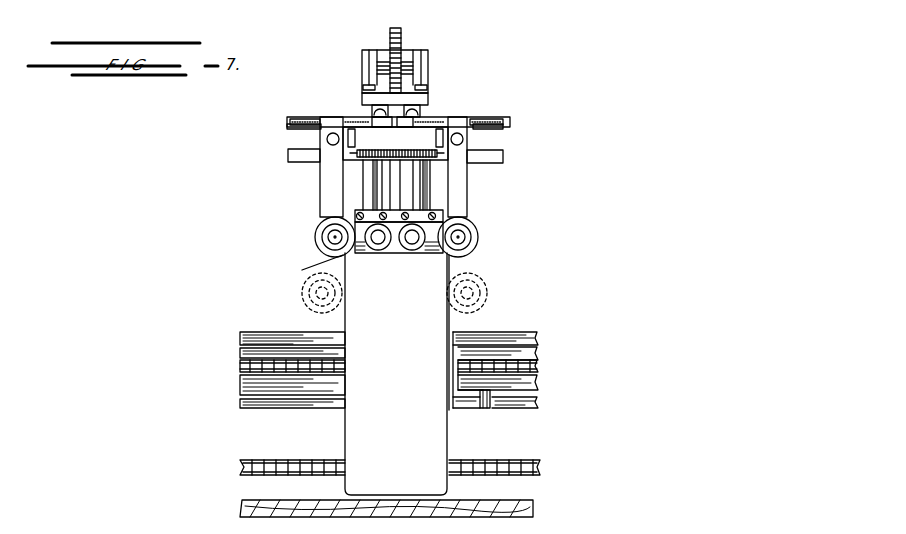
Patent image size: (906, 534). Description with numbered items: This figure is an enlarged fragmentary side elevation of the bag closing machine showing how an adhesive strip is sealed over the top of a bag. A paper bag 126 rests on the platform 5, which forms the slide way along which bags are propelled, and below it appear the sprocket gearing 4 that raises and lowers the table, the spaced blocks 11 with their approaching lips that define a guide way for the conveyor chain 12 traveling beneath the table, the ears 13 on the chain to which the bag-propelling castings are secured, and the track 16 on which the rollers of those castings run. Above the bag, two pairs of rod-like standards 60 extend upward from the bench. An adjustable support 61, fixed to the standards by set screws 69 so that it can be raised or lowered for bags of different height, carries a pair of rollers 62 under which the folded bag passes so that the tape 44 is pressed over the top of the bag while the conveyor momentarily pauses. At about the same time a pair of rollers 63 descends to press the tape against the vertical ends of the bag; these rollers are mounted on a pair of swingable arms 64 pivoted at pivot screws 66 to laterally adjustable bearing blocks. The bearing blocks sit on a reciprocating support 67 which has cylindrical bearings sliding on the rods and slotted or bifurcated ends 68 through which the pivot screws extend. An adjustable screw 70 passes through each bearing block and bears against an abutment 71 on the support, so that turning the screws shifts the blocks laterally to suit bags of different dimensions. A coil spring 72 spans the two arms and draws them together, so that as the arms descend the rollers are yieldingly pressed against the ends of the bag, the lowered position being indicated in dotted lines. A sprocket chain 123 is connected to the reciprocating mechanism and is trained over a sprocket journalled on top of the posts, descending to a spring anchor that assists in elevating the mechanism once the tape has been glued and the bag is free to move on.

The sprocket chain 123 is at (401, 33).
The reciprocating support 67 is at (420, 120).
The abutment 71 is at (397, 115).
The coil spring 72 is at (431, 117).
The adjustable screw 70 is at (303, 120).
The set screws 69 is at (319, 136).
The swingable arms 64 is at (336, 172).
The pivot screws 66 is at (333, 132).
The slotted ends 68 is at (300, 143).
The adjustable support 61 is at (423, 213).
The rod-like standards 60 is at (367, 182).
The rollers 62 is at (410, 242).
The rollers 63 is at (315, 236).
The tape 44 is at (445, 253).
The paper bag 126 is at (396, 374).
The spaced blocks 11 is at (517, 355).
The conveyor chain 12 is at (535, 372).
The track 16 is at (532, 403).
The ears 13 is at (480, 410).
The sprocket gearing 4 is at (507, 465).
The platform 5 is at (525, 506).